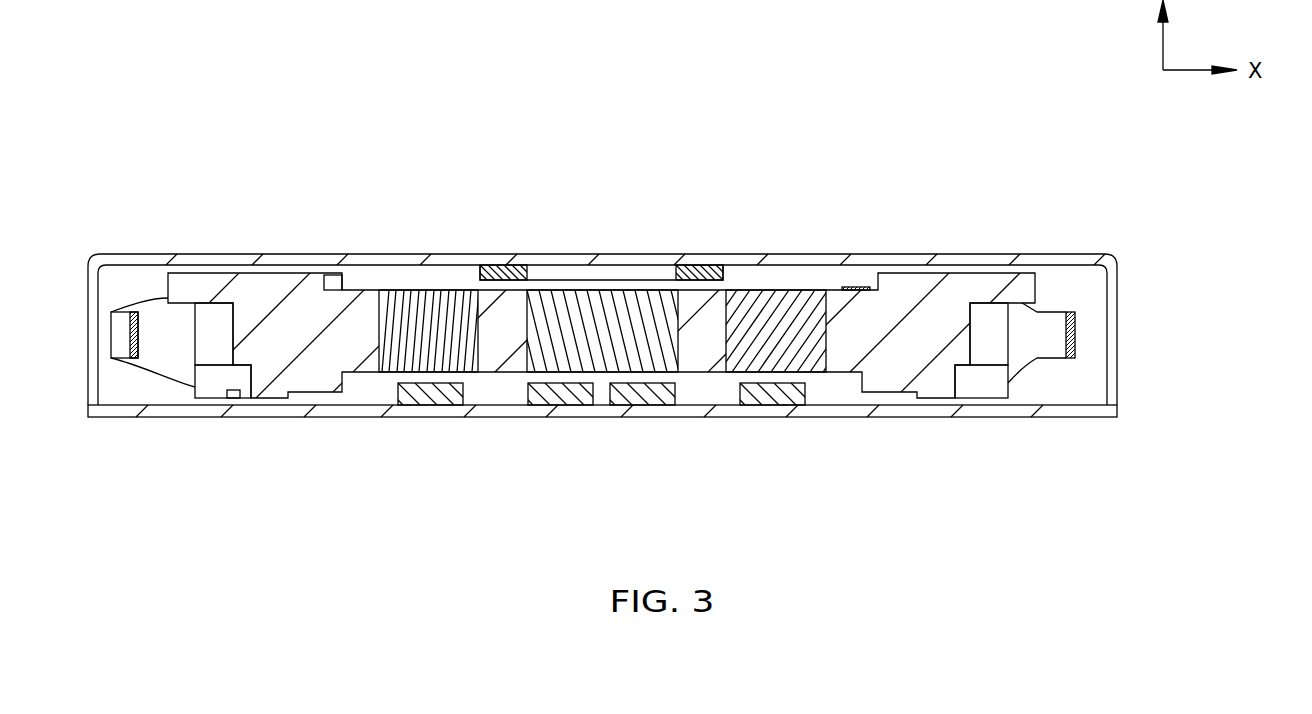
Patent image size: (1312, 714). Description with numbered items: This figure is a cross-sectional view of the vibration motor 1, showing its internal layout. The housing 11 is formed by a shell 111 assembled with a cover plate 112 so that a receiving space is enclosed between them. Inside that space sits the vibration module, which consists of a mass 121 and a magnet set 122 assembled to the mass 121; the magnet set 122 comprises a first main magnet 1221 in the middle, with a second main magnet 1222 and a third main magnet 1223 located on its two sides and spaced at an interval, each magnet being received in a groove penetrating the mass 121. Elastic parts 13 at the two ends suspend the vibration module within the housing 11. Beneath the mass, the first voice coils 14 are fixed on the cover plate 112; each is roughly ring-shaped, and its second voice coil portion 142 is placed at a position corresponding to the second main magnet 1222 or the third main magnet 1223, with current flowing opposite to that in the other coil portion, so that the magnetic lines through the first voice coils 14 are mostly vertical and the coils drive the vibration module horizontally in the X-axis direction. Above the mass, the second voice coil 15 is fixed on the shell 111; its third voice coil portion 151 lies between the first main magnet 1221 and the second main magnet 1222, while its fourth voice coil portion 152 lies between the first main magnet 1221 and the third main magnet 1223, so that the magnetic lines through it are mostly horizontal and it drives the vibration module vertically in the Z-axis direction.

The vibration motor 1 is at (648, 27).
The housing 11 is at (1237, 278).
The shell 111 is at (1110, 290).
The cover plate 112 is at (1080, 408).
The mass 121 is at (937, 366).
The magnet set 122 is at (396, 316).
The first main magnet 1221 is at (553, 330).
The second main magnet 1222 is at (770, 325).
The third main magnet 1223 is at (427, 340).
The elastic part 13 is at (128, 352).
The first voice coil 14 is at (408, 405).
The second voice coil portion 142 is at (432, 392).
The second voice coil 15 is at (613, 167).
The third voice coil portion 151 is at (700, 272).
The fourth voice coil portion 152 is at (503, 272).